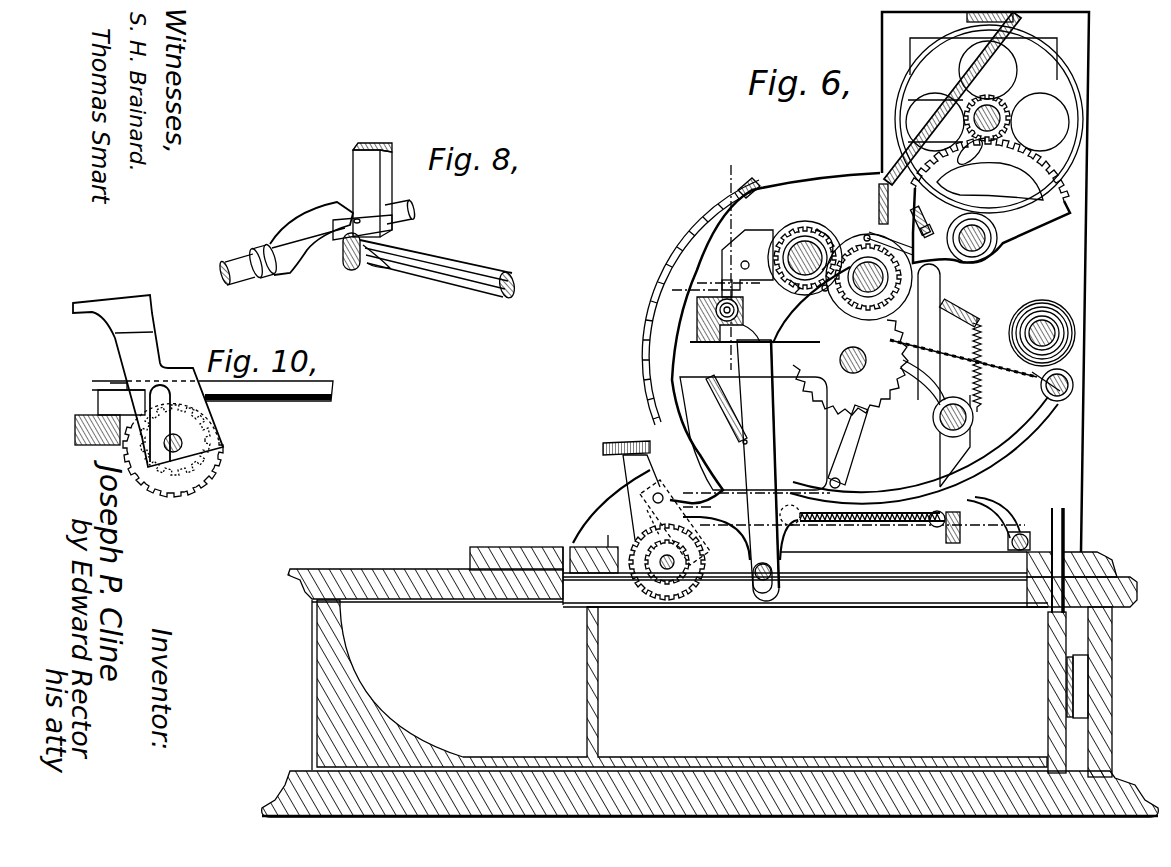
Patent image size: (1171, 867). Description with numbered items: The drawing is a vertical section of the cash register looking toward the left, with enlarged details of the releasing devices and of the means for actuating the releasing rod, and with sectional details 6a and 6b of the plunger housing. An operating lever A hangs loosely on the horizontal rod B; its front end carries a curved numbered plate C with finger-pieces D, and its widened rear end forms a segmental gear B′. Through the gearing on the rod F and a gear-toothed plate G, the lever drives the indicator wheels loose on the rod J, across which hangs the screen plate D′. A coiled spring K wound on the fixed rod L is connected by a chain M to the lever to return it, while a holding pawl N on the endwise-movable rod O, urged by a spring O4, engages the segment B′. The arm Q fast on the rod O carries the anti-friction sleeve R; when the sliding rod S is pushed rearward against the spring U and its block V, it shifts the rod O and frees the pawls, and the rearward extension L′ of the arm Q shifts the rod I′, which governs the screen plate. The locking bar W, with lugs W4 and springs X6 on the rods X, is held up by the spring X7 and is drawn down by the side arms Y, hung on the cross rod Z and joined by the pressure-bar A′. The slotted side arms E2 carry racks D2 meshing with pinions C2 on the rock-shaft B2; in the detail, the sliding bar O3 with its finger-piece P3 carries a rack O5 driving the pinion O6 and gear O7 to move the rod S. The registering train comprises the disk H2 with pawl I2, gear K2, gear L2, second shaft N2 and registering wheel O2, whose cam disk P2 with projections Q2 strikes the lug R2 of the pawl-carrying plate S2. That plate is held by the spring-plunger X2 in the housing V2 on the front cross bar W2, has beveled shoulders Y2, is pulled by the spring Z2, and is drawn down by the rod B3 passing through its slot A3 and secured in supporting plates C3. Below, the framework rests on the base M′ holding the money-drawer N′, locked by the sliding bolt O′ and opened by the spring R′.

In FIG. 6, the money-drawer N′ is at (680, 685).
In FIG. 6, the base M′ is at (1105, 680).
In FIG. 6, the spring R′ is at (1062, 688).
In FIG. 6, the fixed rod L is at (1018, 530).
In FIG. 6, the coiled spring X7 is at (975, 80).
In FIG. 6, the rod J is at (1010, 118).
In FIG. 6, the screen plate D′ is at (895, 120).
In FIG. 6, the locking bar W is at (879, 201).
In FIG. 6, the gear-toothed plate G is at (1015, 170).
In FIG. 6, the spring X6 is at (934, 213).
In FIG. 6, the rod X is at (928, 233).
In FIG. 6, the lug W4 is at (945, 245).
In FIG. 6, the operating lever A is at (726, 360).
In FIG. 6, the curved plate C is at (713, 220).
In FIG. 6, the section line 6b is at (730, 257).
In FIG. 6, the finger-piece D is at (732, 176).
In FIG. 6, the section line 6a is at (672, 290).
In FIG. 6, the front cross bar W2 is at (702, 328).
In FIG. 6, the spring-plunger X2 is at (740, 307).
In FIG. 6, the shoulder Y2 is at (727, 290).
In FIG. 6, the housing V2 is at (753, 332).
In FIG. 6, the second shaft N2 is at (783, 257).
In FIG. 6, the cam disk P2 is at (780, 270).
In FIG. 6, the registering wheel O2 is at (815, 230).
In FIG. 6, the gear L2 is at (803, 232).
In FIG. 6, the cam projection Q2 is at (823, 233).
In FIG. 6, the pawl I2 is at (884, 241).
In FIG. 6, the lug R2 is at (850, 300).
In FIG. 6, the rod F is at (877, 285).
In FIG. 6, the gear K2 is at (852, 302).
In FIG. 6, the pawl-carrying plate S2 is at (783, 313).
In FIG. 6, the circular disk H2 is at (885, 320).
In FIG. 6, the segmental gear B′ is at (850, 367).
In FIG. 6, the horizontal rod B is at (840, 361).
In FIG. 6, the coiled spring Z2 is at (728, 413).
In FIG. 6, the arm Q is at (943, 455).
In FIG. 8, the arm Q is at (372, 231).
In FIG. 6, the rod O is at (940, 418).
In FIG. 6, the holding pawl N is at (946, 393).
In FIG. 6, the chain M is at (963, 338).
In FIG. 6, the spring O4 is at (984, 391).
In FIG. 6, the coiled spring K is at (1040, 310).
In FIG. 6, the cross rod Z is at (1043, 386).
In FIG. 6, the sliding rod S is at (947, 510).
In FIG. 8, the sliding rod S is at (456, 267).
In FIG. 10, the sliding rod S is at (247, 400).
In FIG. 6, the spring U is at (832, 518).
In FIG. 6, the side arm Y is at (790, 505).
In FIG. 6, the block V is at (759, 512).
In FIG. 6, the supporting plate C3 is at (790, 545).
In FIG. 6, the anti-friction sleeve R is at (946, 535).
In FIG. 8, the anti-friction sleeve R is at (351, 271).
In FIG. 6, the sliding bolt O′ is at (1054, 518).
In FIG. 6, the endwise movable rod I′ is at (1008, 541).
In FIG. 8, the endwise movable rod I′ is at (236, 262).
In FIG. 6, the rod B3 is at (756, 578).
In FIG. 6, the slot A3 is at (779, 593).
In FIG. 6, the pressure-bar A′ is at (623, 442).
In FIG. 6, the side arm E2 is at (642, 481).
In FIG. 6, the rack D2 is at (680, 510).
In FIG. 6, the pinion C2 is at (667, 562).
In FIG. 6, the rock-shaft B2 is at (667, 562).
In FIG. 10, the rock-shaft B2 is at (176, 455).
In FIG. 8, the rearward extension L′ is at (275, 240).
In FIG. 10, the finger-piece P3 is at (132, 298).
In FIG. 10, the sliding bar O3 is at (130, 353).
In FIG. 10, the rack O5 is at (223, 445).
In FIG. 10, the pinion O6 is at (215, 468).
In FIG. 10, the gear O7 is at (192, 483).